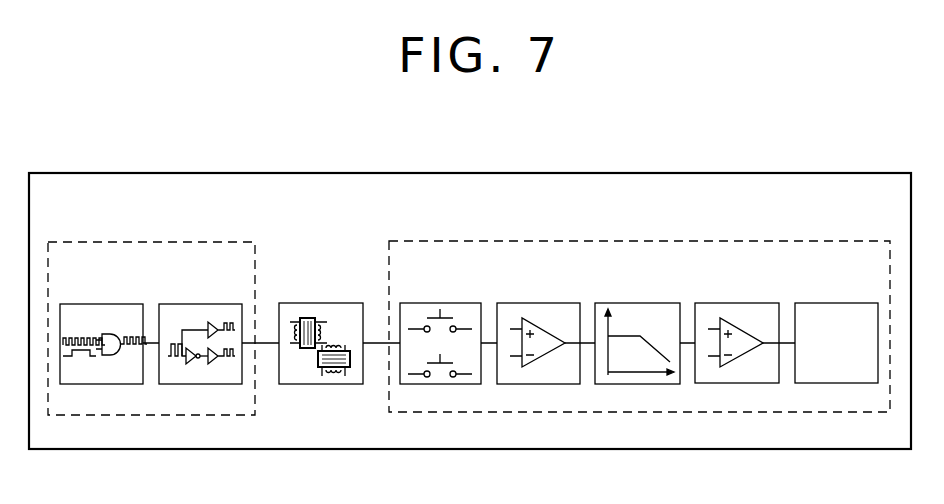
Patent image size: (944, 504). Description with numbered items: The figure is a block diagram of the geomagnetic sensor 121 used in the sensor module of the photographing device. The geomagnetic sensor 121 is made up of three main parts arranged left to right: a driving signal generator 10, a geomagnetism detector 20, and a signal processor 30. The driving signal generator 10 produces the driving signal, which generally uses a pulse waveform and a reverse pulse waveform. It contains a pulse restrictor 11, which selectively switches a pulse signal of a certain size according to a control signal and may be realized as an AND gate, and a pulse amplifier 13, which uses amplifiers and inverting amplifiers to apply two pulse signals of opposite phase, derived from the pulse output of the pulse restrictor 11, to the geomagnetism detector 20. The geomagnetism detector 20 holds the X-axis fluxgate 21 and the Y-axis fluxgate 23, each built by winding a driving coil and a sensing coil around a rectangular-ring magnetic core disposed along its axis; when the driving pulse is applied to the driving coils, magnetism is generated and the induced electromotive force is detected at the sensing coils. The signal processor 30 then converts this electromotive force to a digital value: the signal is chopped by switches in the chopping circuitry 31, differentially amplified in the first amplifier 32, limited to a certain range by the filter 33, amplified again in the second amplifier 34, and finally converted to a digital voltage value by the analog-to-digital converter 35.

The geomagnetic sensor 121 is at (449, 172).
The driving signal generator 10 is at (152, 242).
The pulse restrictor 11 is at (101, 304).
The pulse amplifier 13 is at (200, 304).
The geomagnetism detector 20 is at (320, 342).
The X-axis fluxgate 21 is at (310, 350).
The Y-axis fluxgate 23 is at (338, 370).
The signal processor 30 is at (634, 241).
The chopping circuitry 31 is at (438, 303).
The first amplifier 32 is at (537, 303).
The filter 33 is at (636, 303).
The second amplifier 34 is at (736, 303).
The analog-to-digital converter 35 is at (836, 303).